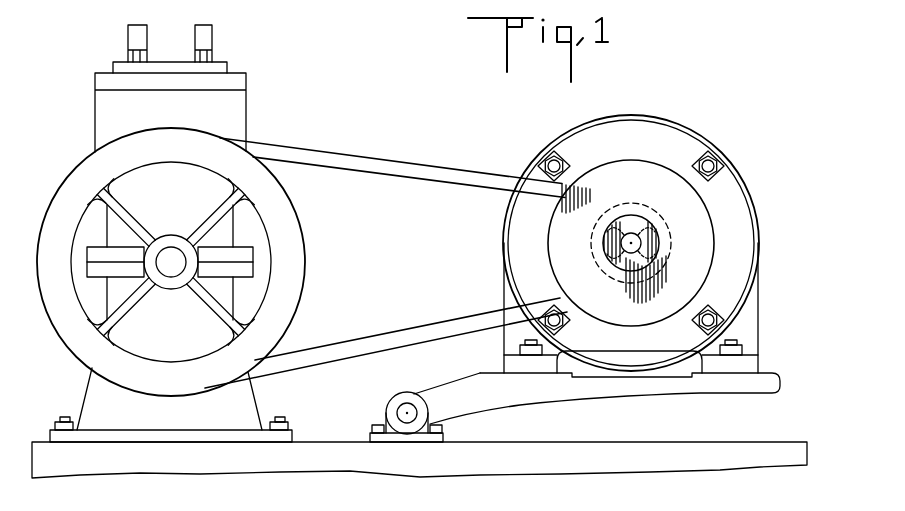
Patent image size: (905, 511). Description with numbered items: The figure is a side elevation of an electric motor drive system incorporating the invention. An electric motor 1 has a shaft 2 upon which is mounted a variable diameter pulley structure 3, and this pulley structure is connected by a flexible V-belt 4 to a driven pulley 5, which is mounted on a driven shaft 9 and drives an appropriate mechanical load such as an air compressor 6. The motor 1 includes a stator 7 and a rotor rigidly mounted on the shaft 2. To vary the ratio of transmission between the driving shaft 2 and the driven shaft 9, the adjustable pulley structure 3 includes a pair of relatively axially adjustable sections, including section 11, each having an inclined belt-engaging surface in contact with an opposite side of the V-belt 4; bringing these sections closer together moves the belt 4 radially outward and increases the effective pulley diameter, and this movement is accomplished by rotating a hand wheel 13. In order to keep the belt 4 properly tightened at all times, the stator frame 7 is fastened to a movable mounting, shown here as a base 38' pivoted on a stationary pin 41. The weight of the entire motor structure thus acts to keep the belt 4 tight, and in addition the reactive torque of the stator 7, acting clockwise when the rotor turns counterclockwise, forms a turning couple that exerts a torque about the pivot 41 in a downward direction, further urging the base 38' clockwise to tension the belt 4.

The electric motor 1 is at (744, 228).
The shaft 2 is at (648, 240).
The variable diameter pulley structure 3 is at (634, 159).
The flexible V-belt 4 is at (385, 162).
The driven pulley 5 is at (293, 225).
The air compressor 6 is at (88, 115).
The stator 7 is at (727, 200).
The driven shaft 9 is at (170, 258).
The axially adjustable section 11 is at (550, 197).
The hand wheel 13 is at (657, 204).
The base 38' is at (597, 401).
The stationary pin 41 is at (405, 411).